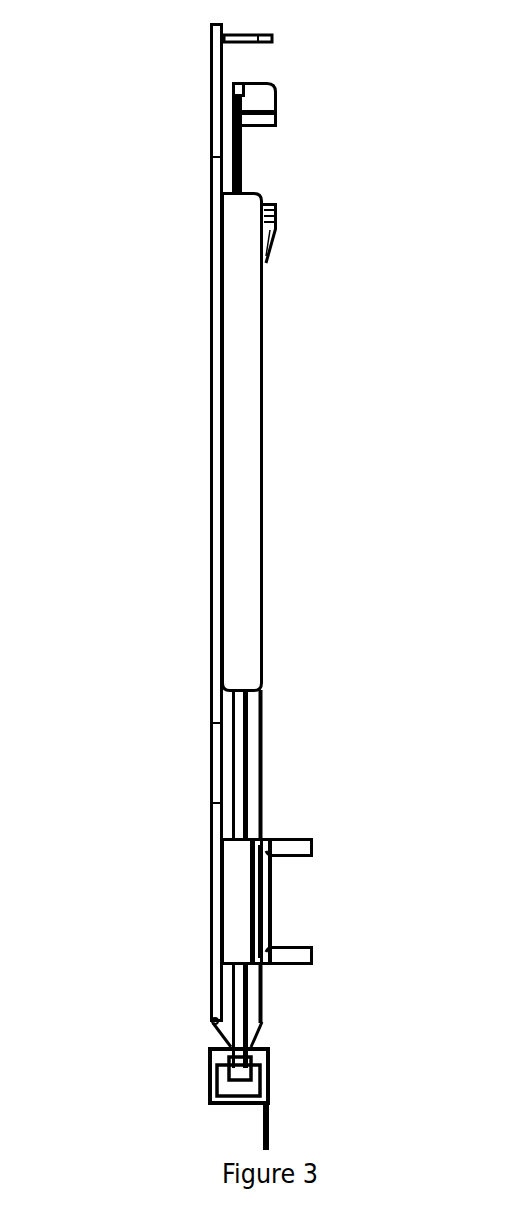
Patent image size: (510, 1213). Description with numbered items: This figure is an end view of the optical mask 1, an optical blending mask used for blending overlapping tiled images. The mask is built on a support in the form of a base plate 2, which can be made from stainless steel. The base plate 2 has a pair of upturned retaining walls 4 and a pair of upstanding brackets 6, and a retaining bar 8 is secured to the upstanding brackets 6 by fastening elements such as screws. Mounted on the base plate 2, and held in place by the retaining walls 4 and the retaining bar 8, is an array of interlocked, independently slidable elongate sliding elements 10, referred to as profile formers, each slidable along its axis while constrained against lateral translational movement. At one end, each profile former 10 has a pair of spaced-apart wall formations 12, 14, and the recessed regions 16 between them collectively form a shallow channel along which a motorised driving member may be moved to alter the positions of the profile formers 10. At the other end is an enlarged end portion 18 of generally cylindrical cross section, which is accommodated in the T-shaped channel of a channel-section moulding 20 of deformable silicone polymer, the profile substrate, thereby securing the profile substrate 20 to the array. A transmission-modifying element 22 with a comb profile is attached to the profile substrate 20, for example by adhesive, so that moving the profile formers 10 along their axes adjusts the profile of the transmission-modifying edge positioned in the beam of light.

The optical mask 1 is at (322, 445).
The base plate 2 is at (210, 226).
The upturned retaining walls 4 is at (236, 434).
The upstanding brackets 6 is at (233, 886).
The retaining bar 8 is at (270, 887).
The elongate sliding elements (profile formers) 10 is at (258, 748).
The wall formation 12 is at (274, 227).
The wall formation 14 is at (275, 98).
The recessed region 16 is at (254, 156).
The enlarged end portion 18 is at (235, 1087).
The channel-section moulding (profile substrate) 20 is at (270, 1073).
The transmission-modifying element 22 is at (270, 1129).